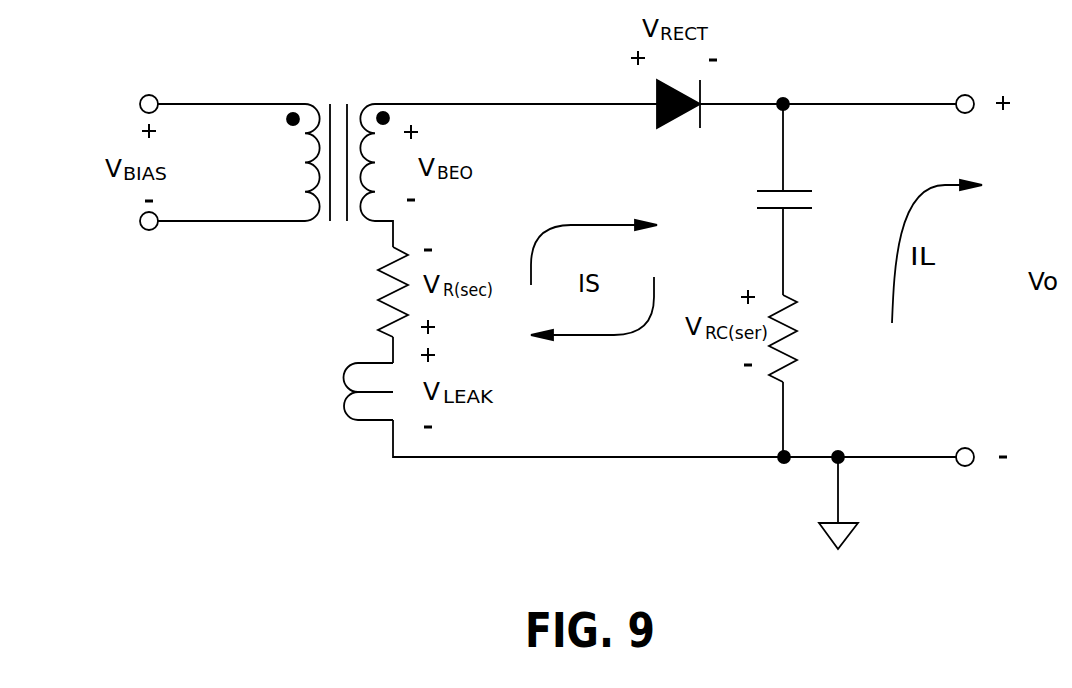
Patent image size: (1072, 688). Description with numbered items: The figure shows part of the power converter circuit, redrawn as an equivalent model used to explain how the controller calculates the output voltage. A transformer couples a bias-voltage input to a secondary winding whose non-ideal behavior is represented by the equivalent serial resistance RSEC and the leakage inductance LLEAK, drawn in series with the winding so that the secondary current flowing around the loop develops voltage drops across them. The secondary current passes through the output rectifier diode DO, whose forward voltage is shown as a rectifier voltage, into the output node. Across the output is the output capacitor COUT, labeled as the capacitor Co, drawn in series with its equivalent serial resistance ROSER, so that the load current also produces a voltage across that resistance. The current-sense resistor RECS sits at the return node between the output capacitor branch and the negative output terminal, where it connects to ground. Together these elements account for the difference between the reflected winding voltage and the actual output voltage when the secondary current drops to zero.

The output rectifier diode DO is at (658, 118).
The output capacitor COUT is at (805, 199).
The equivalent serial resistance of the primary winding RSEC is at (361, 292).
The leakage inductance LLEAK is at (284, 391).
The output capacitor series resistance ROSER is at (824, 376).
The equivalent serial resistance of the output capacitor RECS is at (840, 479).